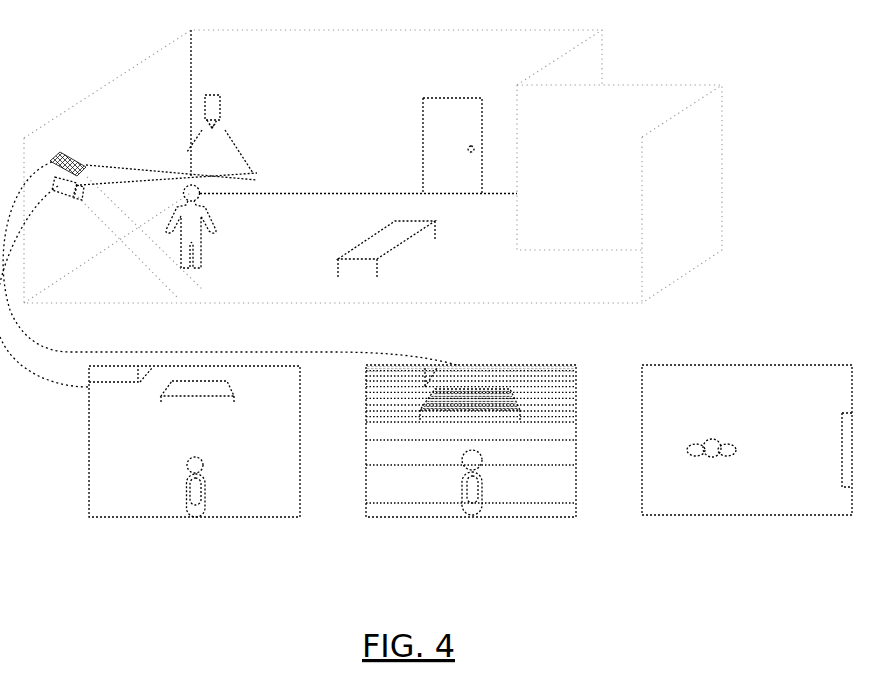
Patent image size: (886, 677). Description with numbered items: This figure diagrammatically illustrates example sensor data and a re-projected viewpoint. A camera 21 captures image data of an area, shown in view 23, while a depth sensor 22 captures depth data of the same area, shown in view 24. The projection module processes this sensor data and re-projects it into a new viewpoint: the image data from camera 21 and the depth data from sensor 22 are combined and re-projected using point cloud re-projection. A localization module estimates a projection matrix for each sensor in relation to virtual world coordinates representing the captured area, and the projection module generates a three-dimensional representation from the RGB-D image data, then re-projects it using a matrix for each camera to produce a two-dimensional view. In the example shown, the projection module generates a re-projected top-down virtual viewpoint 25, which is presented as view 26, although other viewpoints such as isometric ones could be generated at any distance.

The camera 21 is at (230, 244).
The sensor 22 is at (44, 282).
The view 23 is at (172, 441).
The view 24 is at (453, 441).
The re-projected top-down virtual viewpoint 25 is at (222, 119).
The view 26 is at (729, 440).